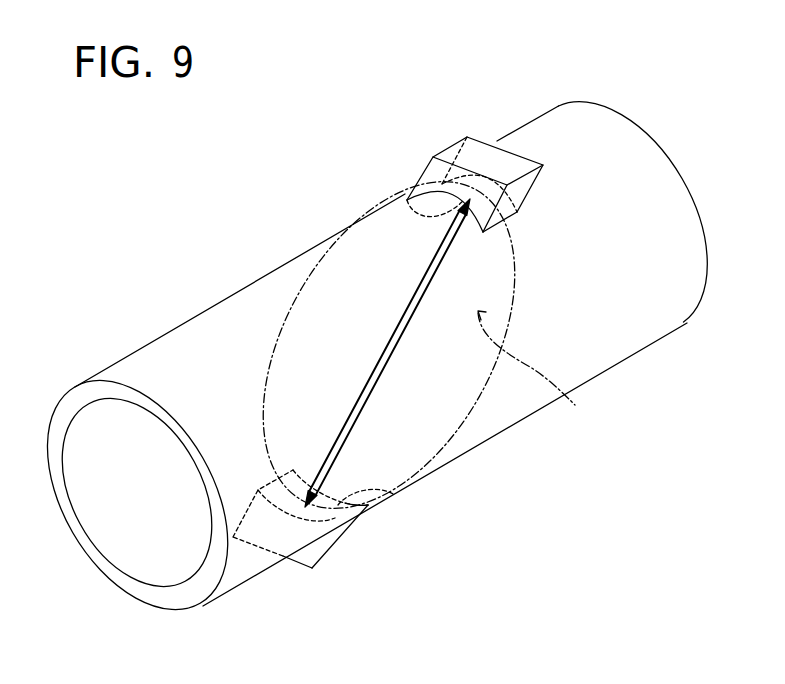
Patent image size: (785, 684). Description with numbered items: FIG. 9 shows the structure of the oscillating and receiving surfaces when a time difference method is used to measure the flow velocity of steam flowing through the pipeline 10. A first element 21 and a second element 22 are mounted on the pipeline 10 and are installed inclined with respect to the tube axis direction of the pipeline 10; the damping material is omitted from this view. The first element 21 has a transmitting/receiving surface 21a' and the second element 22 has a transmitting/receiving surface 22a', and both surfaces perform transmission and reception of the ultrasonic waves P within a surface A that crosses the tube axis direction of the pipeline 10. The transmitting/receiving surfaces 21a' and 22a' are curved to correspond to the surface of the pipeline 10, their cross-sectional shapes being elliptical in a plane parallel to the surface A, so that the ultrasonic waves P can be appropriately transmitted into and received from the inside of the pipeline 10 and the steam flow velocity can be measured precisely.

The pipeline 10 is at (187, 340).
The first element 21 is at (479, 152).
The transmitting/receiving surface 21a' is at (373, 187).
The second element 22 is at (325, 543).
The transmitting/receiving surface 22a' is at (415, 501).
The ultrasonic waves P is at (390, 340).
The surface A is at (533, 377).